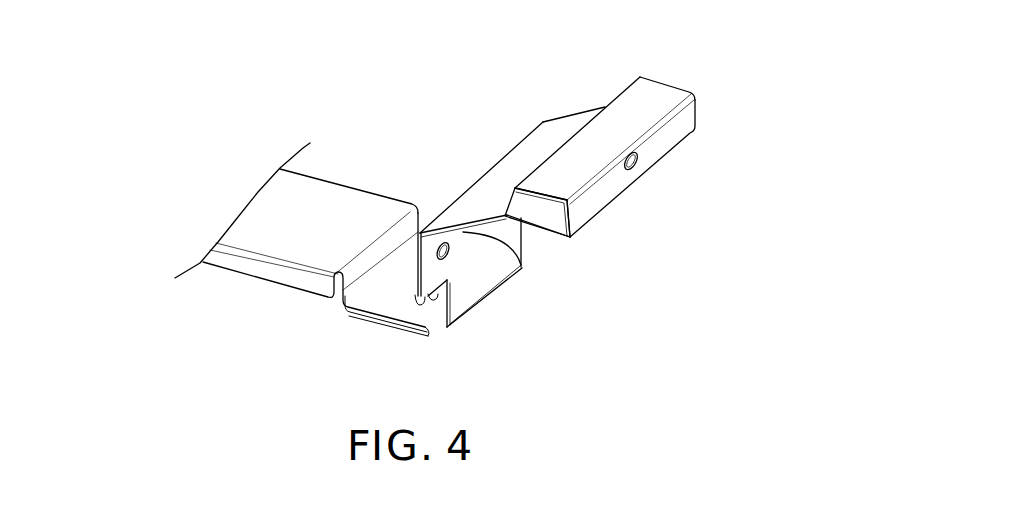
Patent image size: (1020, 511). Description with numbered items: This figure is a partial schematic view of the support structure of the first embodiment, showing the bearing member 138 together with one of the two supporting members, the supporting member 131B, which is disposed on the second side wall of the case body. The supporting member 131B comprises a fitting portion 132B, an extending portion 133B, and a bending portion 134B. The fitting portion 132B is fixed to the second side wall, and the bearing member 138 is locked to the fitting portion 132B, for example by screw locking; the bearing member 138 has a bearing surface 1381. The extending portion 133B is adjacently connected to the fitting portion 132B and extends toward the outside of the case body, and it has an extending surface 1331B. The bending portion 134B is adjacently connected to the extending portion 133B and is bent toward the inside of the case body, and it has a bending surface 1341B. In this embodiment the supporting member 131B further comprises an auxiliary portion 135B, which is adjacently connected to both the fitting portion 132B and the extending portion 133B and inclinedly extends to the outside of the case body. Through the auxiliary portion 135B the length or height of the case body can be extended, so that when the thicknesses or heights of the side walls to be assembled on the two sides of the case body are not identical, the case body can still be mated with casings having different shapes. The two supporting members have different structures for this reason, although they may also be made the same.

The bearing member 138 is at (260, 284).
The bearing surface 1381 is at (332, 212).
The supporting member 131B is at (786, 186).
The fitting portion 132B is at (472, 280).
The extending portion 133B is at (550, 236).
The extending surface 1331B is at (547, 210).
The bending portion 134B is at (650, 150).
The bending surface 1341B is at (658, 92).
The auxiliary portion 135B is at (522, 268).